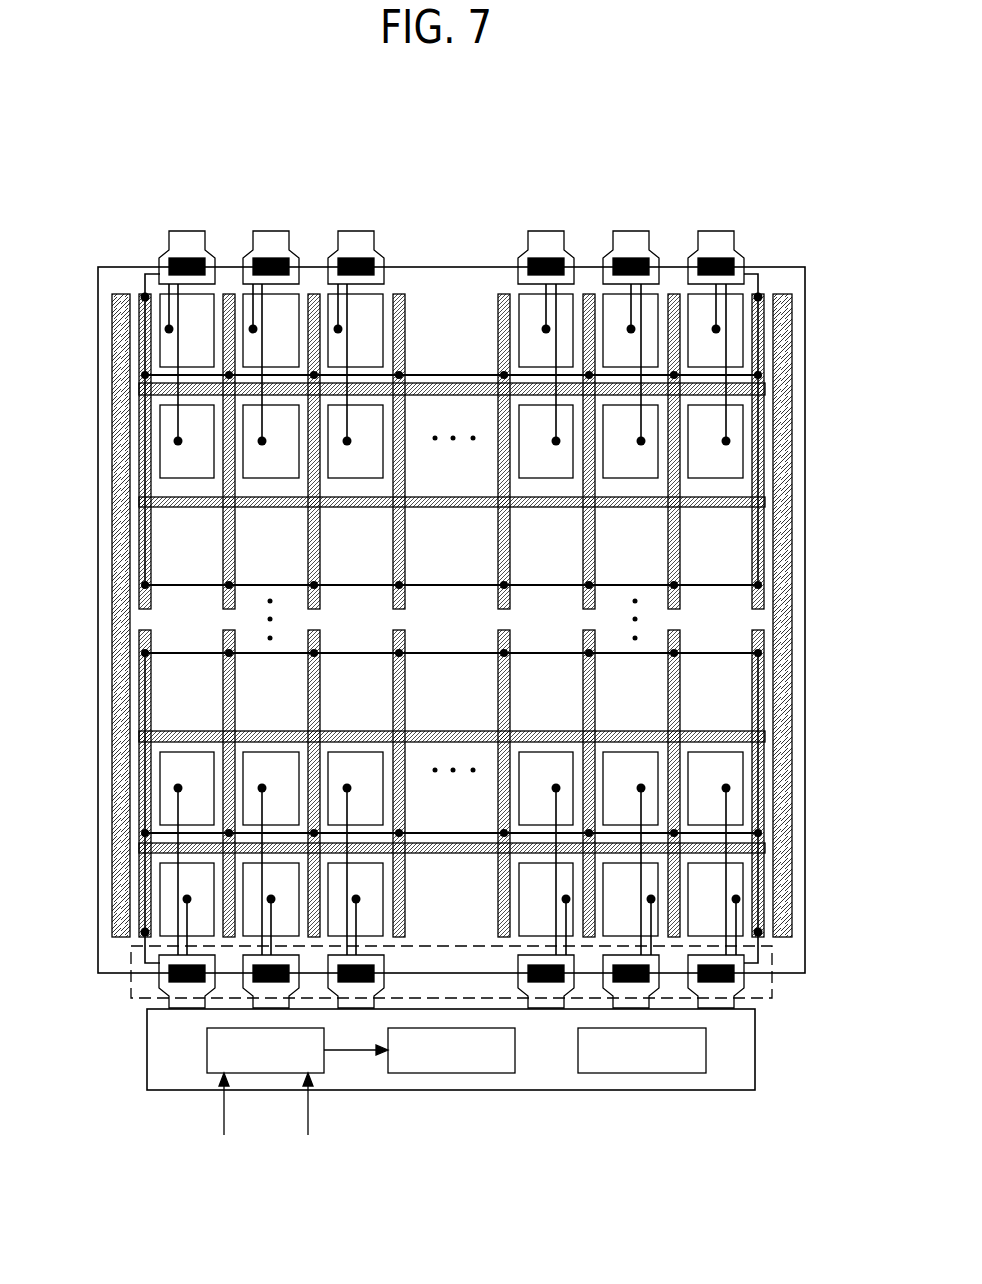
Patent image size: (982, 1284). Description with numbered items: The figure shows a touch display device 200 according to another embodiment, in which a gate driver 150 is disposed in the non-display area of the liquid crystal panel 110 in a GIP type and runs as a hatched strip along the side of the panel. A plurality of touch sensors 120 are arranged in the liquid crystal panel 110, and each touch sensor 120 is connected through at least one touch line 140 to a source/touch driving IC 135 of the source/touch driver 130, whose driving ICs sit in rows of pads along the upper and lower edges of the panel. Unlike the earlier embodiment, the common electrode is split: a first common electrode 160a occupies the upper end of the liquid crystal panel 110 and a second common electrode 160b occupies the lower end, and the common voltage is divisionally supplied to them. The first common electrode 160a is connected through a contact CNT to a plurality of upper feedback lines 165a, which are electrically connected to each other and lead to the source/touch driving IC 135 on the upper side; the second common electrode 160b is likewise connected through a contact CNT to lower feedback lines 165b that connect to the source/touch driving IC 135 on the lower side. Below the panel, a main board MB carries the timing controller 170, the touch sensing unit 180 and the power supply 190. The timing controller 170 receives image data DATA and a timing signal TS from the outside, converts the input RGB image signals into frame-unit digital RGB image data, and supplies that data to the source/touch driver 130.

The touch display device 200 is at (280, 147).
The liquid crystal panel 110 is at (791, 262).
The touch sensor 120 is at (260, 468).
The source/touch driver 130 is at (473, 597).
The source/touch driving IC 135 is at (157, 254).
The touch line 140 is at (177, 352).
The gate driver 150 is at (122, 575).
The first common electrode 160a is at (352, 508).
The second common electrode 160b is at (353, 731).
The upper feedback line 165a is at (452, 372).
The lower feedback line 165b is at (453, 650).
The timing controller 170 is at (249, 1061).
The touch sensing unit 180 is at (435, 1061).
The power supply 190 is at (625, 1061).
The contact CNT is at (177, 441).
The main board MB is at (755, 1048).
The data signal DATA is at (224, 1118).
The timing signal TS is at (307, 1118).